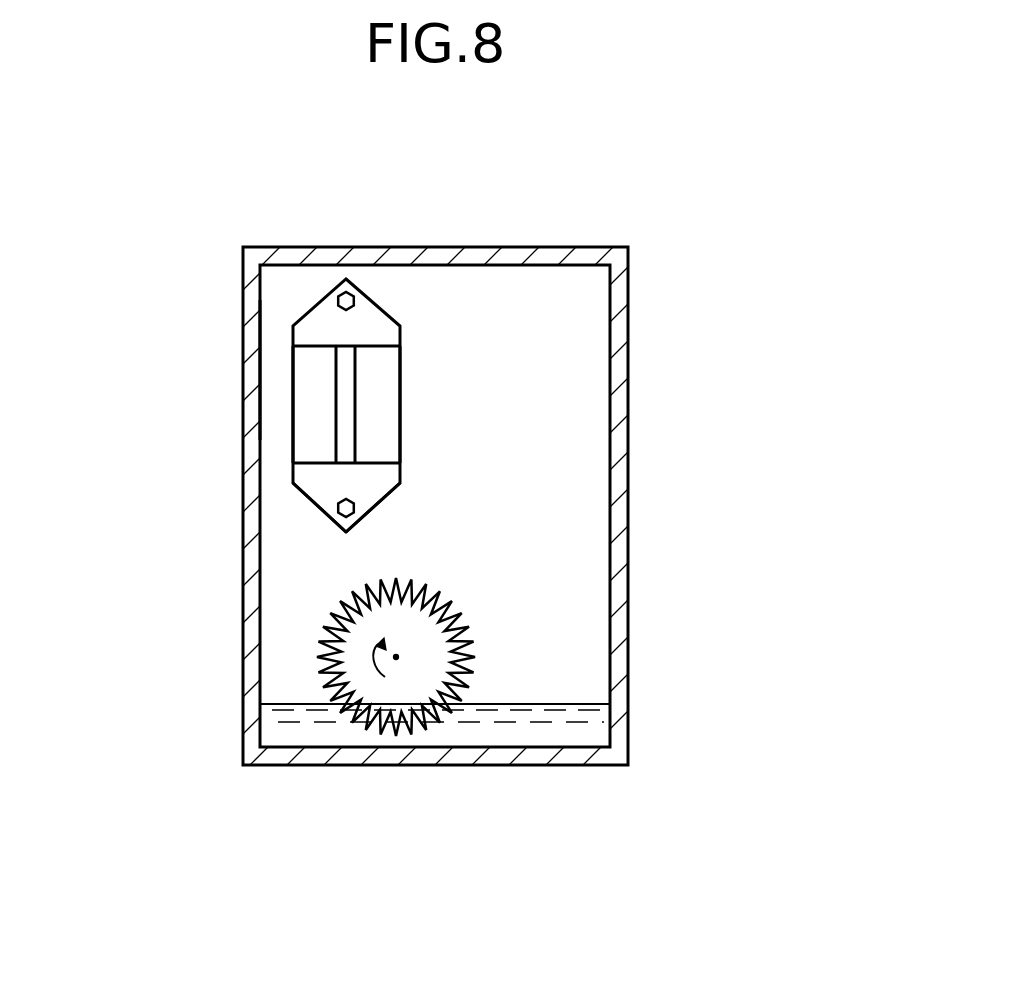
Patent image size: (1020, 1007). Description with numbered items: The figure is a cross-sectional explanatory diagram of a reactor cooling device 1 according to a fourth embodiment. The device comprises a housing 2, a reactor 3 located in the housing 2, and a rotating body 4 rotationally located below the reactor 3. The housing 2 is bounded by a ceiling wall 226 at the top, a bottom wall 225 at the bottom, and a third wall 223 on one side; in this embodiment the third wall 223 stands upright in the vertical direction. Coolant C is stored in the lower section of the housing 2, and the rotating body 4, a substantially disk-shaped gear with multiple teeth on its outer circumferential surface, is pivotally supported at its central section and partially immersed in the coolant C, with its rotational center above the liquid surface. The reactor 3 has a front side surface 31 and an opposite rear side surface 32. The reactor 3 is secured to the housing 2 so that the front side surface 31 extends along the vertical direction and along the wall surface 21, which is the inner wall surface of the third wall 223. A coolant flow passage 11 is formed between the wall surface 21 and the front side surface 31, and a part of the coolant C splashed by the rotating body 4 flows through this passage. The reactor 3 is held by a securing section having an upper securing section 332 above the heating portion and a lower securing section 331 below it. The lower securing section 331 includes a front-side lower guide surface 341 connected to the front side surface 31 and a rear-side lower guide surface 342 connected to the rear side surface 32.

The reactor cooling device 1 is at (624, 214).
The housing 2 is at (369, 511).
The third wall 223 is at (247, 318).
The ceiling wall 226 is at (312, 258).
The bottom wall 225 is at (484, 757).
The wall surface 21 is at (262, 372).
The coolant flow passage 11 is at (280, 418).
The reactor 3 is at (437, 371).
The front side surface 31 is at (293, 445).
The rear side surface 32 is at (400, 395).
The lower securing section 331 is at (340, 534).
The upper securing section 332 is at (345, 275).
The front-side lower guide surface 341 is at (308, 508).
The rear-side lower guide surface 342 is at (382, 502).
The rotating body 4 is at (406, 678).
The coolant C is at (596, 733).